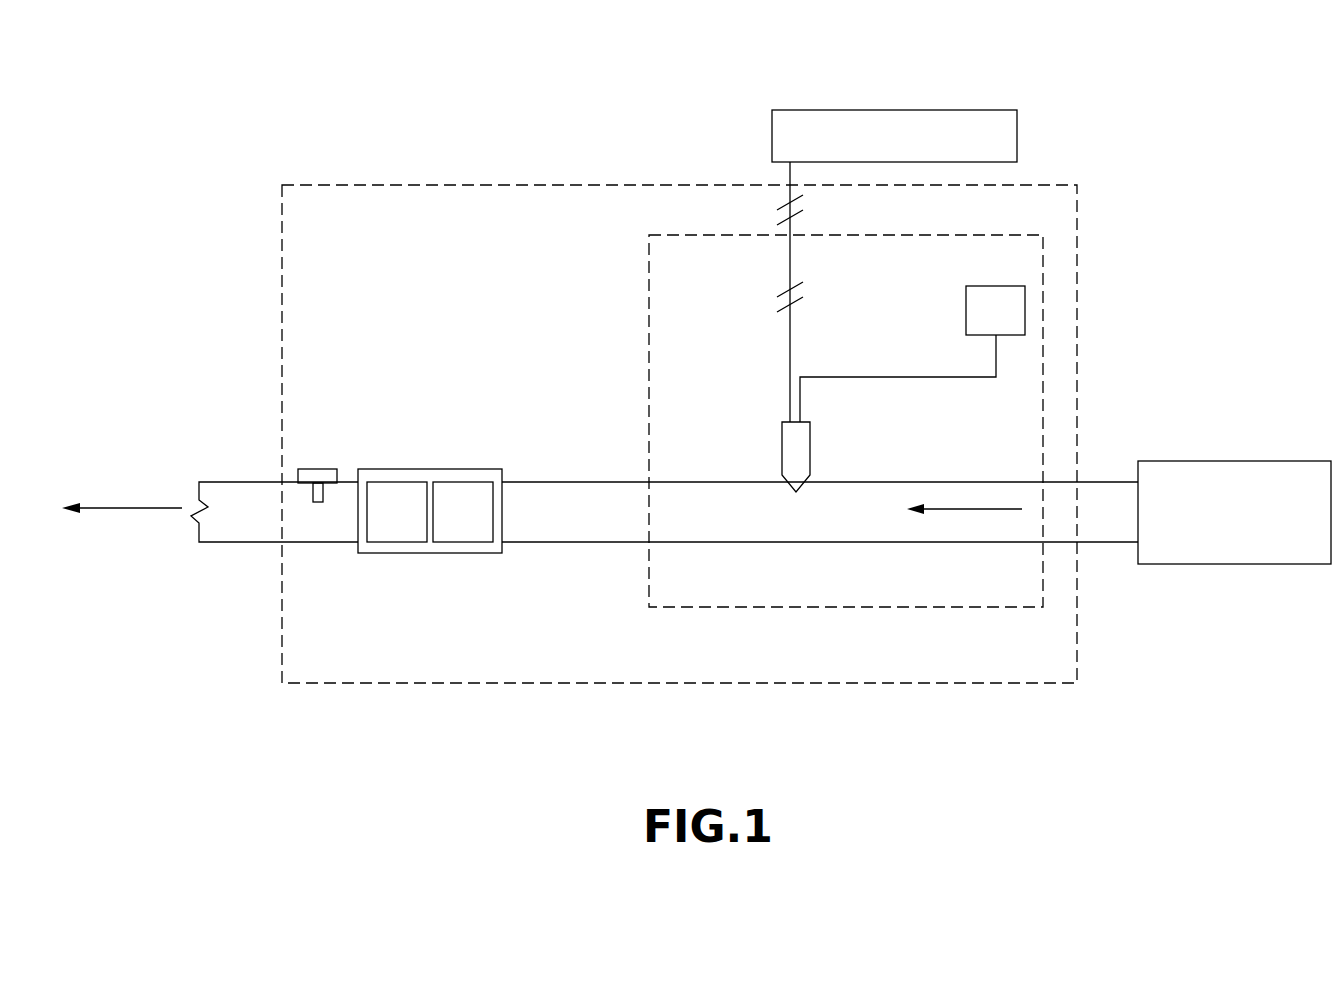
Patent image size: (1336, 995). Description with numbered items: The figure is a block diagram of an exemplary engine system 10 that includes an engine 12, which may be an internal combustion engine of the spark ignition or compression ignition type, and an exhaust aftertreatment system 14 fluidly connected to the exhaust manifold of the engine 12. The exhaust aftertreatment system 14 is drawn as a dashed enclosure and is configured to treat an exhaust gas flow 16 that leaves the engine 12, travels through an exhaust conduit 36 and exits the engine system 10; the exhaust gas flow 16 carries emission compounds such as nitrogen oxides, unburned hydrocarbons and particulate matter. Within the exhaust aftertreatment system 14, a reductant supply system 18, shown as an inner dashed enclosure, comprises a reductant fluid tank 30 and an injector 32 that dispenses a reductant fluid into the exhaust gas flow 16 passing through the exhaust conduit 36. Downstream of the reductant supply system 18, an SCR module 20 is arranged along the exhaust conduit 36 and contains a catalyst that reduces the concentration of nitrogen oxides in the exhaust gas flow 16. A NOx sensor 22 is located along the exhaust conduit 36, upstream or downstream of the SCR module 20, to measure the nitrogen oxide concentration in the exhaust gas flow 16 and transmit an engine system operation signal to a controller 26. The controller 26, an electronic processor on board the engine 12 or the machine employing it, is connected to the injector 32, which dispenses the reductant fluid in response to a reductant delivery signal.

The engine system 10 is at (1146, 98).
The engine 12 is at (1234, 512).
The exhaust aftertreatment system 14 is at (1077, 285).
The exhaust gas flow 16 is at (150, 507).
The reductant supply system 18 is at (649, 318).
The SCR module 20 is at (430, 511).
The NOx sensor 22 is at (318, 469).
The controller 26 is at (894, 266).
The reductant fluid tank 30 is at (912, 354).
The injector 32 is at (782, 450).
The exhaust conduit 36 is at (590, 482).